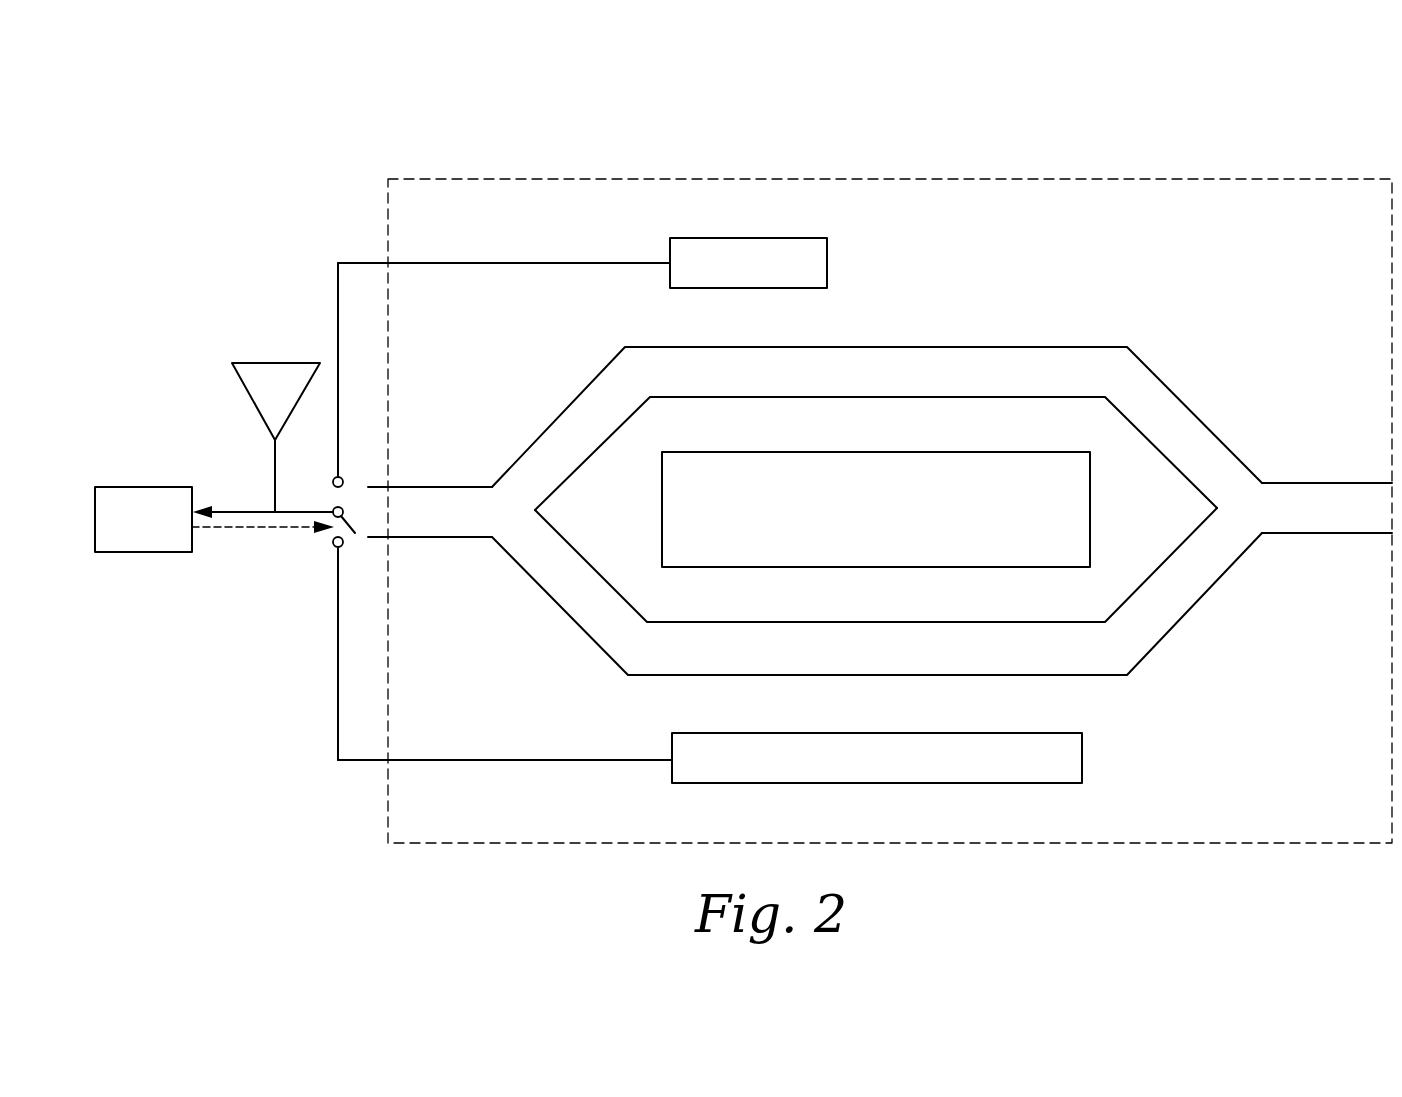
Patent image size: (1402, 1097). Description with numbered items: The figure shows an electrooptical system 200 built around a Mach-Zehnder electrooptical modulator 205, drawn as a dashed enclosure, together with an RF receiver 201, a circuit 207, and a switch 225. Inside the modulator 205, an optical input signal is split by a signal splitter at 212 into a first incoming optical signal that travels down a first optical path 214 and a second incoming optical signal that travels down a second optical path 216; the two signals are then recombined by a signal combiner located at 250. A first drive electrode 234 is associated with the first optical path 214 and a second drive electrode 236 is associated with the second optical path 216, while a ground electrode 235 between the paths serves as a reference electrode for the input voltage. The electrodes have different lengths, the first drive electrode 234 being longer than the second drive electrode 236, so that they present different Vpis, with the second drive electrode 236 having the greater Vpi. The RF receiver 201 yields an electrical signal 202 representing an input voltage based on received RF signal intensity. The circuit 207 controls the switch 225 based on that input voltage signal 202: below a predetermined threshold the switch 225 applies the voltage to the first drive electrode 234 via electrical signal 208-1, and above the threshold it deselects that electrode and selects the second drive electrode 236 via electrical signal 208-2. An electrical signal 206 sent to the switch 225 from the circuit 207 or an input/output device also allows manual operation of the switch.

The electrooptical system 200 is at (333, 127).
The RF receiver 201 is at (275, 363).
The electrical signal 202 is at (240, 512).
The electrooptical modulator 205 is at (893, 179).
The electrical signal 206 is at (266, 530).
The circuit 207 is at (143, 487).
The electrical signal 208-1 is at (507, 760).
The electrical signal 208-2 is at (507, 263).
The signal splitter 212 is at (512, 510).
The first optical path 214 is at (561, 605).
The second optical path 216 is at (558, 423).
The switch 225 is at (325, 552).
The first drive electrode 234 is at (1083, 760).
The ground electrode 235 is at (876, 452).
The second drive electrode 236 is at (828, 263).
The signal combiner location 250 is at (1241, 508).